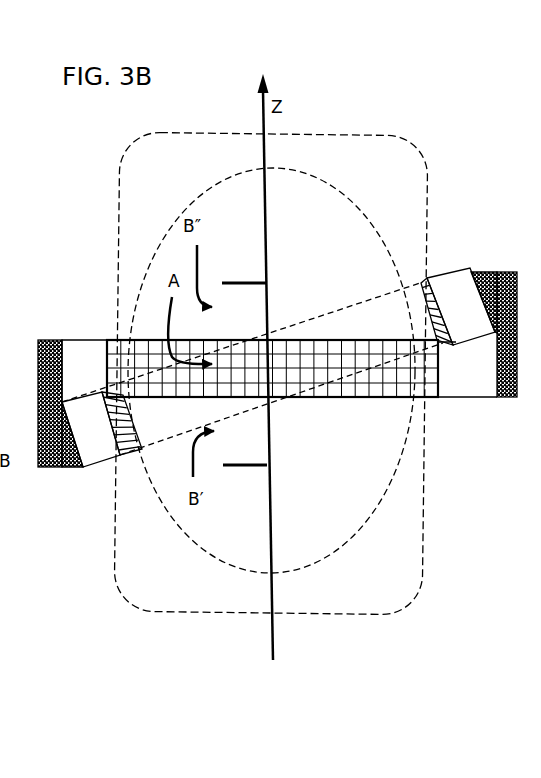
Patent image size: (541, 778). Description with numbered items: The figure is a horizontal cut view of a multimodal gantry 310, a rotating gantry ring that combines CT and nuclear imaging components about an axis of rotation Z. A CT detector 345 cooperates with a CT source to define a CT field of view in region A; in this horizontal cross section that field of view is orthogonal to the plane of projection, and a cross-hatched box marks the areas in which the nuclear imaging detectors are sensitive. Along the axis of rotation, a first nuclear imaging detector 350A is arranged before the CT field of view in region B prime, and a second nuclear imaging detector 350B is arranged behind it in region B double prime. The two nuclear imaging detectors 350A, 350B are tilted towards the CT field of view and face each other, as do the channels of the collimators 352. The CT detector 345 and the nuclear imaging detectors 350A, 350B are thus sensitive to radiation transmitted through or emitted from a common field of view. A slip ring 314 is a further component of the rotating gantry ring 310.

The multimodal gantry 310 is at (366, 19).
The slip ring 314 is at (537, 442).
The CT detector 345 is at (418, 398).
The nuclear imaging detector 350A is at (97, 456).
The nuclear imaging detector 350B is at (447, 283).
The collimators 352 is at (428, 258).